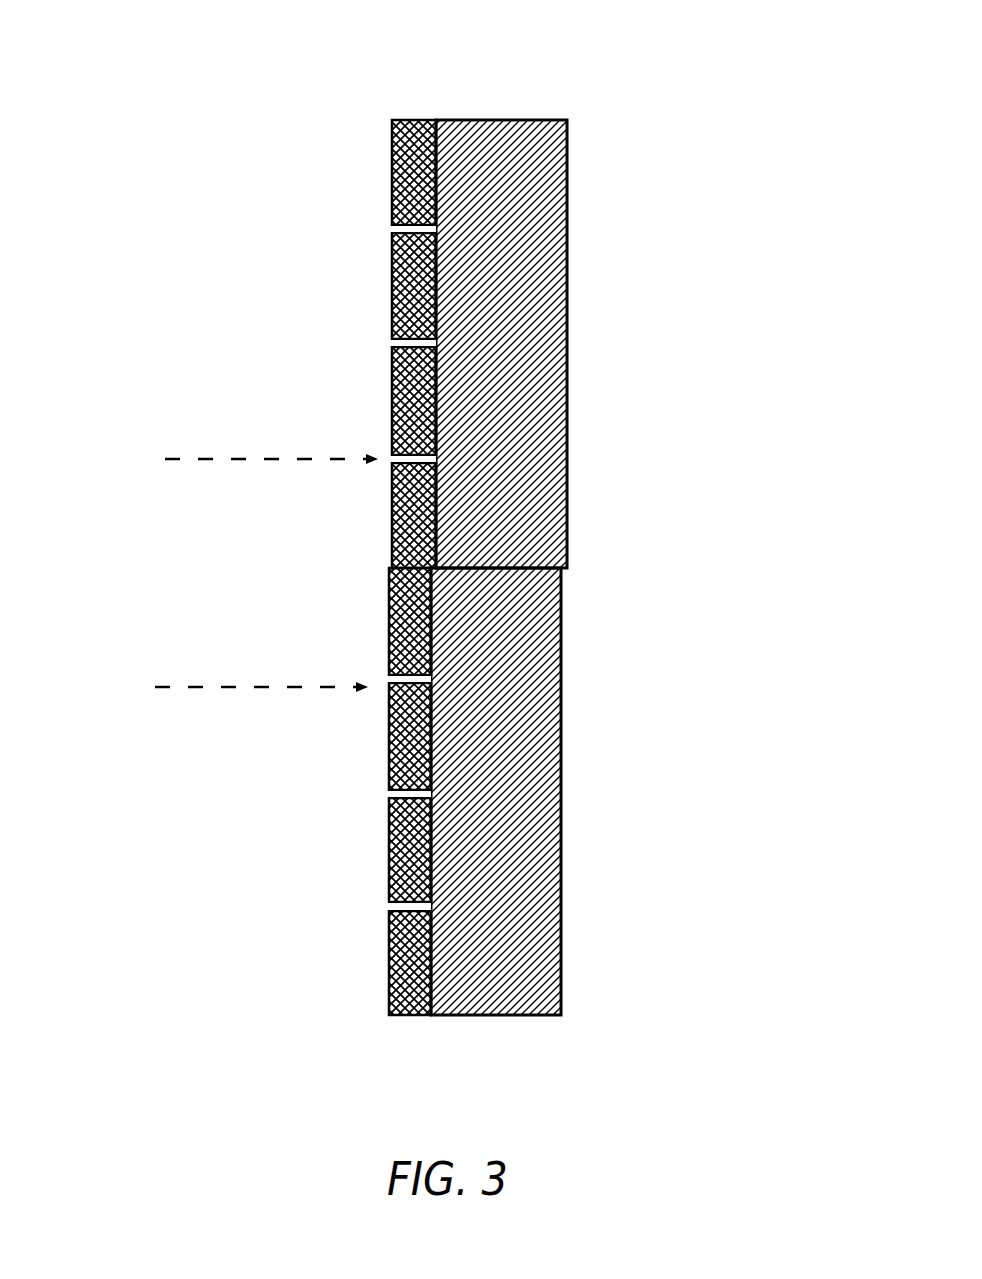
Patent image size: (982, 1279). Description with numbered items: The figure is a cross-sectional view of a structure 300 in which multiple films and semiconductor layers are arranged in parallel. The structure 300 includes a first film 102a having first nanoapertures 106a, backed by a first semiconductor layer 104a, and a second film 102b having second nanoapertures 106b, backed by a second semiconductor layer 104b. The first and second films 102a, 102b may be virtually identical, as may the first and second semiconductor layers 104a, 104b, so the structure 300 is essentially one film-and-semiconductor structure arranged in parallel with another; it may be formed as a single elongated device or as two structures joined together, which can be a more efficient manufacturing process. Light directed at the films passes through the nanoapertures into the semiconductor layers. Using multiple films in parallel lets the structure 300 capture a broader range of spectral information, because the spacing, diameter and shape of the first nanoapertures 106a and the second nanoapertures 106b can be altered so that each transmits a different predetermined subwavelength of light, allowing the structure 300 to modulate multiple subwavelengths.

The structure 300 is at (486, 25).
The first film 102a is at (418, 118).
The second film 102b is at (413, 1018).
The first semiconductor layer 104a is at (567, 286).
The second semiconductor layer 104b is at (562, 633).
The first nanoapertures 106a is at (376, 342).
The second nanoapertures 106b is at (372, 788).